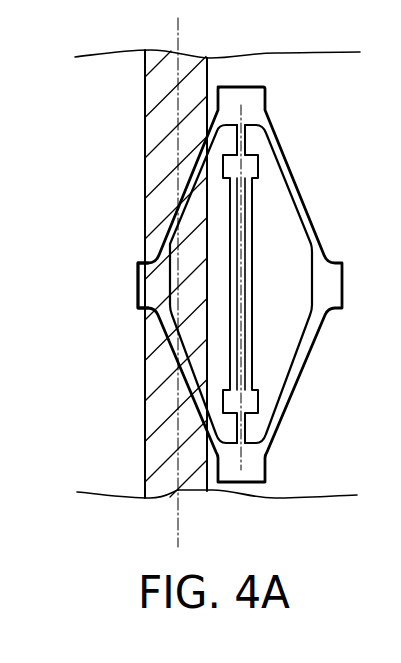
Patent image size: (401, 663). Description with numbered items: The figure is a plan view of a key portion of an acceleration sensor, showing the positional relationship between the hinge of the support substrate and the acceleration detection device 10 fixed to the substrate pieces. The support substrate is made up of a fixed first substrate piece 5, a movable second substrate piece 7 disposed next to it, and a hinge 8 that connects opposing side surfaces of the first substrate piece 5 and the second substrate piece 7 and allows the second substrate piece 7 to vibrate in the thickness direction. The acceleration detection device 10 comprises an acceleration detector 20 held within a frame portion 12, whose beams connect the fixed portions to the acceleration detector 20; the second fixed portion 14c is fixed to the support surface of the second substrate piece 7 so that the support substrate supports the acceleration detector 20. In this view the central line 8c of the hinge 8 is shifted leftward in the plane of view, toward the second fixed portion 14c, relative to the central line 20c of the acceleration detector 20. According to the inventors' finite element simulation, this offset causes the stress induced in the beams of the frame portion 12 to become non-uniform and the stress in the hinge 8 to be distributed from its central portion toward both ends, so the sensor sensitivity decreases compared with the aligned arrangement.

The first substrate piece 5 is at (298, 488).
The second substrate piece 7 is at (110, 488).
The hinge 8 is at (165, 130).
The central line of the hinge 8c is at (177, 33).
The acceleration detection device 10 is at (228, 284).
The frame portion 12 is at (318, 227).
The second fixed portion 14c is at (148, 280).
The acceleration detector 20 is at (253, 233).
The central line of the acceleration detector 20c is at (243, 110).